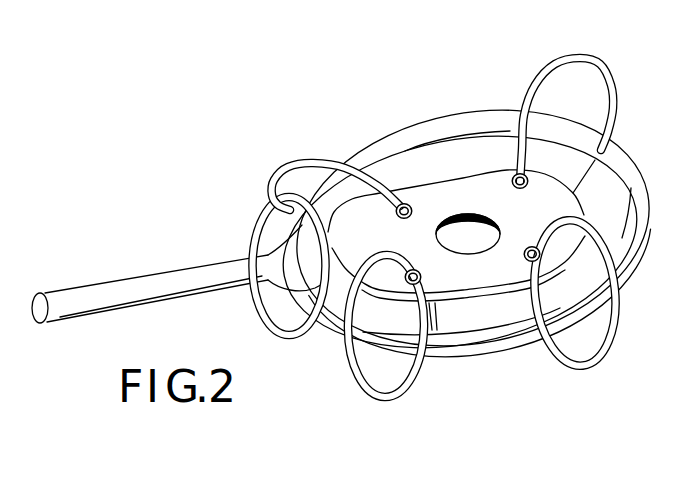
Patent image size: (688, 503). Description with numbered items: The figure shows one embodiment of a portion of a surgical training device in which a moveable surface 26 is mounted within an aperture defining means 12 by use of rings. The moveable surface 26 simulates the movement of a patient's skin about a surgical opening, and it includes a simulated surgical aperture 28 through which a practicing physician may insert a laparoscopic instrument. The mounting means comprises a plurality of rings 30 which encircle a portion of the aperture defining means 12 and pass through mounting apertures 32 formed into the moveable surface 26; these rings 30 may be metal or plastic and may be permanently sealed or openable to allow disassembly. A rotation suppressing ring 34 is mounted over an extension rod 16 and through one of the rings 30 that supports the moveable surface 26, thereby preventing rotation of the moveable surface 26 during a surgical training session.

The aperture defining means 12 is at (393, 142).
The handle shaft 16 is at (115, 280).
The moveable surface 26 is at (460, 292).
The simulated surgical aperture 28 is at (471, 230).
The rings 30 is at (307, 160).
The mounting apertures 32 is at (532, 262).
The rotation suppressing ring 34 is at (253, 227).